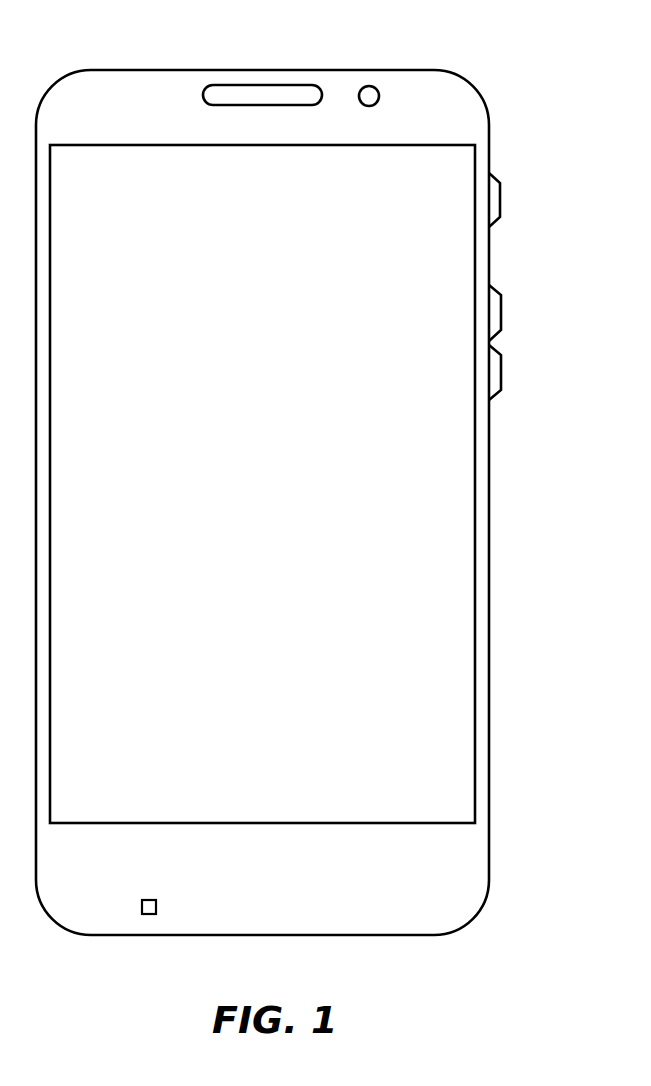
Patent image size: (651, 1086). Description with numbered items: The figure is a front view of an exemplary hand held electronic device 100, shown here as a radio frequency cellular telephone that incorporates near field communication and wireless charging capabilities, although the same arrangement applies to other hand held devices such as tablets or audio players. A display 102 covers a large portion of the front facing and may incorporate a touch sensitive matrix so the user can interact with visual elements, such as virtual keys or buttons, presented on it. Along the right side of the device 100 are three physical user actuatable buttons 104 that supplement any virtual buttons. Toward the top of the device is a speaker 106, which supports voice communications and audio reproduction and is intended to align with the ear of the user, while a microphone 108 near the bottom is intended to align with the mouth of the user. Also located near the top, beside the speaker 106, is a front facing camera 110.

The hand held electronic device 100 is at (475, 870).
The display 102 is at (428, 638).
The physical user actuatable buttons 104 is at (500, 200).
The speaker 106 is at (262, 85).
The microphone 108 is at (149, 915).
The front facing camera 110 is at (369, 86).